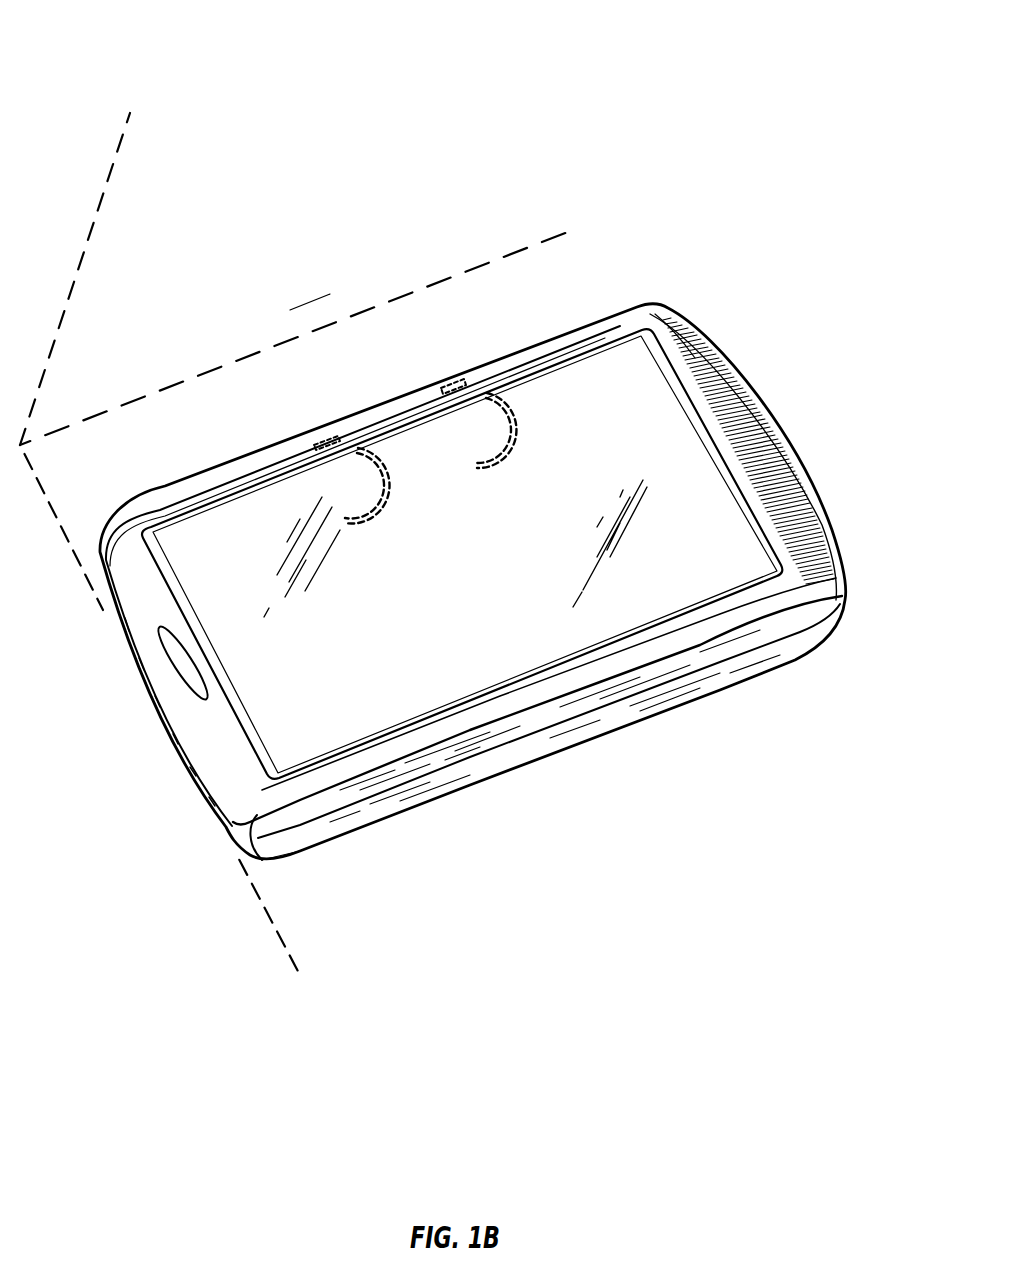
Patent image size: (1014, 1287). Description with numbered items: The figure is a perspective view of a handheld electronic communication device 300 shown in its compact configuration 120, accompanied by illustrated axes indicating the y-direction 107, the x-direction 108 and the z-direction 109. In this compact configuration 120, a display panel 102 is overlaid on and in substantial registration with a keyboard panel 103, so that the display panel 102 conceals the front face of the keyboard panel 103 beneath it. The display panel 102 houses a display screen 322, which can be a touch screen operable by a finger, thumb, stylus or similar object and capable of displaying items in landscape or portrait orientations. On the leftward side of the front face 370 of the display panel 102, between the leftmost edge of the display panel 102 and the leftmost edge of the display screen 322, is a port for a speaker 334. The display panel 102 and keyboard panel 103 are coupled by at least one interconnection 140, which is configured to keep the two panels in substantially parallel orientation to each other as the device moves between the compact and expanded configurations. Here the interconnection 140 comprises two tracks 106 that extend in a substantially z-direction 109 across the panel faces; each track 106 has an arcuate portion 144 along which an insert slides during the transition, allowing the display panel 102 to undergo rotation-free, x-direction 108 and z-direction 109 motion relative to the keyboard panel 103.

The handheld electronic communication device 300 is at (700, 855).
The display panel 102 is at (792, 620).
The keyboard panel 103 is at (750, 664).
The compact configuration 120 is at (718, 220).
The display screen 322 is at (655, 355).
The front face 370 is at (727, 437).
The speaker 334 is at (180, 664).
The track 106 is at (325, 438).
The arcuate portion 144 is at (390, 492).
The y-direction 107 is at (126, 67).
The x-direction 108 is at (603, 197).
The z-direction 109 is at (335, 1002).
The interconnection 140 is at (340, 296).